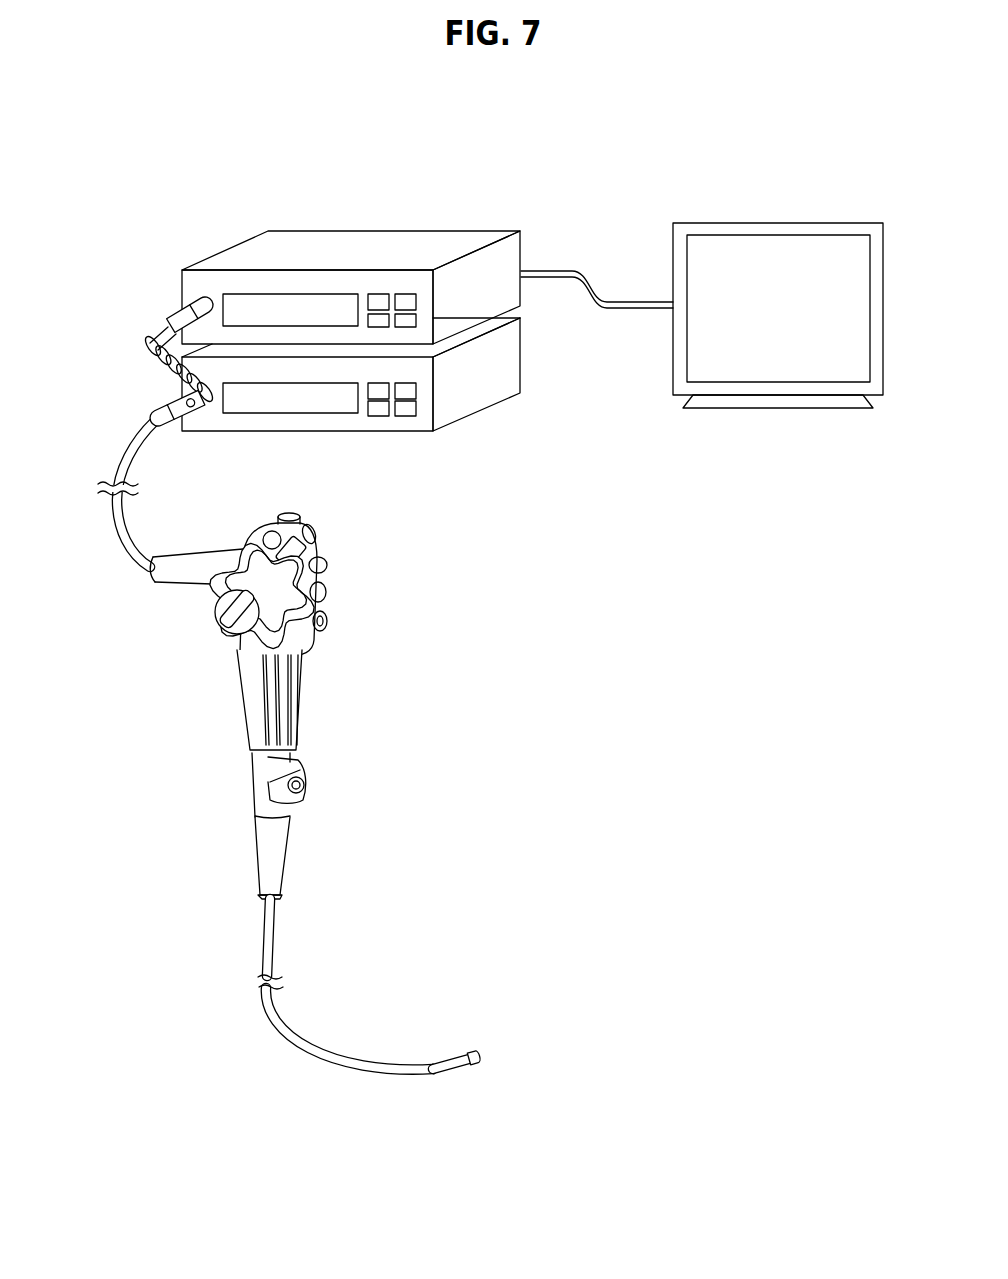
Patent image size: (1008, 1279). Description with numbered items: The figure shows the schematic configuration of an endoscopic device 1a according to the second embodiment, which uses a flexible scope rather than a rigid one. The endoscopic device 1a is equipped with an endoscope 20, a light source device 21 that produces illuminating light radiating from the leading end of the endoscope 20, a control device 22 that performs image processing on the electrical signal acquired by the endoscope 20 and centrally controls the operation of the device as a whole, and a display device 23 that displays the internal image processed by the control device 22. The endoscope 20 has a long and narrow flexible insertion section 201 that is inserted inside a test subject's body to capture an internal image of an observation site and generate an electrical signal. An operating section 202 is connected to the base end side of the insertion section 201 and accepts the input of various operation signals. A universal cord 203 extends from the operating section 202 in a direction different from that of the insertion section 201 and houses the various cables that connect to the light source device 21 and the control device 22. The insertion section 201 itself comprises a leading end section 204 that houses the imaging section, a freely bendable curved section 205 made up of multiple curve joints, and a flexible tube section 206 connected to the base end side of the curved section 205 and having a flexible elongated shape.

The endoscopic device 1a is at (822, 147).
The endoscope 20 is at (341, 540).
The light source device 21 is at (510, 357).
The control device 22 is at (488, 240).
The display device 23 is at (779, 228).
The insertion section 201 is at (327, 1043).
The operating section 202 is at (275, 522).
The universal cord 203 is at (112, 522).
The leading end section 204 is at (475, 1073).
The curved section 205 is at (452, 1062).
The flexible tube section 206 is at (317, 1053).